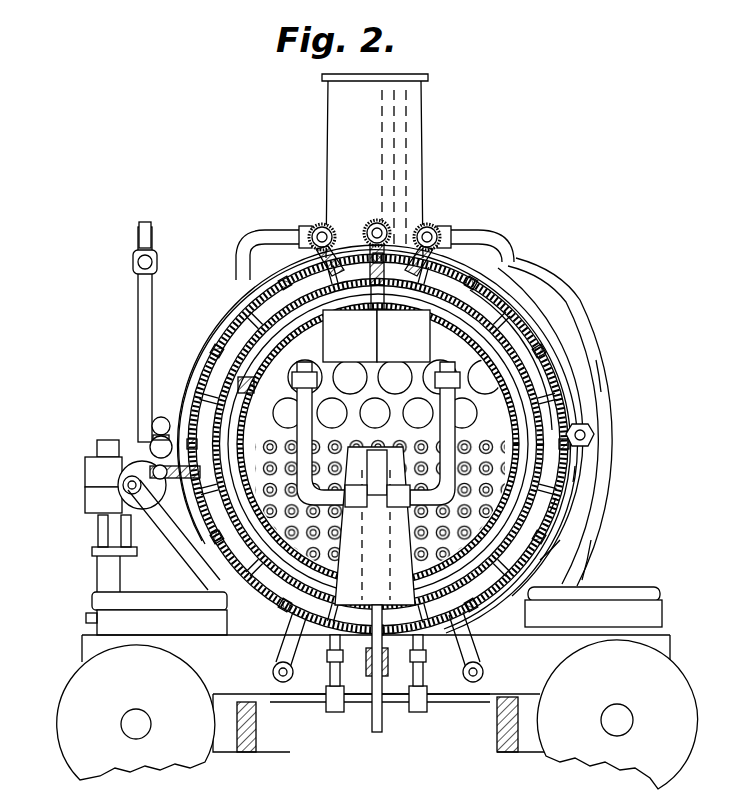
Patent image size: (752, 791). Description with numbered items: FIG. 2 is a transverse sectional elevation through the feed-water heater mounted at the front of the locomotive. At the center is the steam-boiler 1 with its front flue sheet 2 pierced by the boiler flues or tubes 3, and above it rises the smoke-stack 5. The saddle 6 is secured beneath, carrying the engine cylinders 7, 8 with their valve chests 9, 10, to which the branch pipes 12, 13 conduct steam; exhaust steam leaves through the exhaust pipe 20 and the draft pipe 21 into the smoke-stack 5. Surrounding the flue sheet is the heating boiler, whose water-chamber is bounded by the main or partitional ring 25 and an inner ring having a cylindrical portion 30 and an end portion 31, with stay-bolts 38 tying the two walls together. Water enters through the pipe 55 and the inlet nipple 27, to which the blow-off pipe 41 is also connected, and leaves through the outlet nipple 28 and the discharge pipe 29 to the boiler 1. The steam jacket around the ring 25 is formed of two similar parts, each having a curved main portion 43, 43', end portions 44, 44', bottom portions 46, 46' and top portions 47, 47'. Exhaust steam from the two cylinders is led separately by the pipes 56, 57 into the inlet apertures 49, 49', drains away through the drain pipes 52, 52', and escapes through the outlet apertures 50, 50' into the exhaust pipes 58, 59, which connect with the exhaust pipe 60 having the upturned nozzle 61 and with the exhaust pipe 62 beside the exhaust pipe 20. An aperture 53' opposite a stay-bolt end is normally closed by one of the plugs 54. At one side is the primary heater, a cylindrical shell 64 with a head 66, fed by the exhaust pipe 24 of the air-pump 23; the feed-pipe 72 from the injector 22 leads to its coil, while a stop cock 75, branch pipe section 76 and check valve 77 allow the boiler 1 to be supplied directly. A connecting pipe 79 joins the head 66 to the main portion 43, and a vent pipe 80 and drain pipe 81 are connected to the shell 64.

The steam-boiler 1 is at (565, 455).
The front flue sheet 2 is at (538, 484).
The boiler flues or tubes 3 is at (548, 490).
The smoke-stack 5 is at (328, 108).
The saddle 6 is at (312, 694).
The engine cylinder 7 is at (58, 724).
The engine cylinder 8 is at (697, 722).
The valve chest 9 is at (95, 609).
The valve chest 10 is at (664, 617).
The branch pipe 12 is at (246, 312).
The branch pipe 13 is at (556, 330).
The exhaust pipe 20 is at (588, 560).
The draft pipe 21 is at (237, 303).
The injector 22 is at (133, 265).
The air-pump 23 is at (86, 490).
The exhaust pipe 24 is at (96, 470).
The main or partitional ring 25 is at (606, 374).
The inlet nipple 27 is at (388, 652).
The outlet nipple 28 is at (340, 241).
The discharge pipe 29 is at (592, 360).
The cylindrical portion 30 is at (576, 390).
The end portion 31 is at (592, 426).
The stay-bolts 38 is at (222, 368).
The blow-off pipe 41 is at (382, 720).
The curved main portion 43 is at (357, 443).
The main portion 43' is at (610, 517).
The end portion 44 is at (222, 422).
The end portion 44' is at (511, 394).
The bottom portion 46 is at (321, 723).
The bottom portion 46' is at (436, 711).
The top portion 47 is at (318, 235).
The top portion 47' is at (431, 224).
The inlet aperture 49 is at (272, 647).
The inlet aperture 49' is at (486, 647).
The outlet aperture 50 is at (350, 336).
The outlet aperture 50' is at (403, 336).
The drain pipe 52 is at (324, 719).
The drain pipe 52' is at (431, 721).
The casing segment 53' is at (618, 471).
The plugs 54 is at (205, 358).
The pipe 55 is at (192, 566).
The pipe 56 is at (330, 680).
The pipe 57 is at (428, 680).
The exhaust pipe 58 is at (268, 233).
The exhaust pipe 59 is at (497, 229).
The exhaust pipe 60 is at (368, 508).
The upturned exhaust nozzle 61 is at (382, 450).
The exhaust pipe 62 is at (580, 528).
The cylindrical shell 64 is at (124, 487).
The head 66 is at (100, 532).
The feed-pipe 72 is at (138, 311).
The stop cock 75 is at (238, 385).
The branch pipe section 76 is at (152, 424).
The check valve 77 is at (150, 446).
The connecting pipe 79 is at (178, 480).
The vent pipe 80 is at (104, 440).
The drain pipe 81 is at (100, 548).